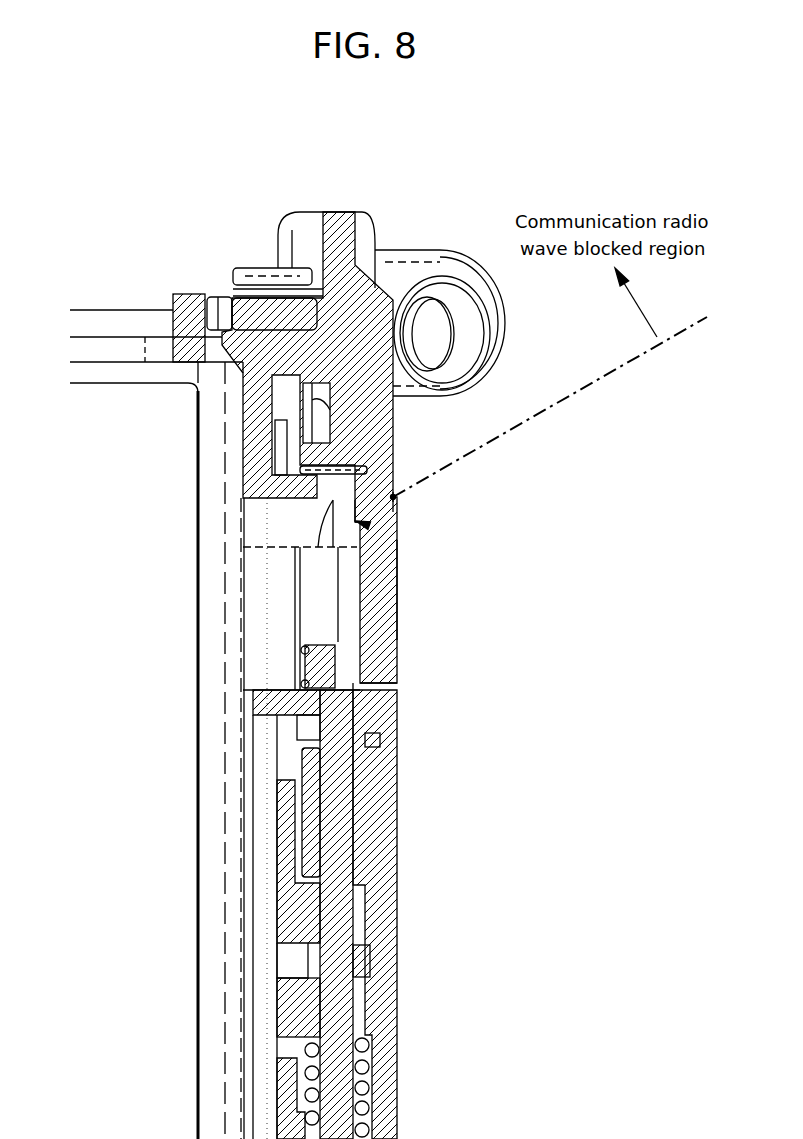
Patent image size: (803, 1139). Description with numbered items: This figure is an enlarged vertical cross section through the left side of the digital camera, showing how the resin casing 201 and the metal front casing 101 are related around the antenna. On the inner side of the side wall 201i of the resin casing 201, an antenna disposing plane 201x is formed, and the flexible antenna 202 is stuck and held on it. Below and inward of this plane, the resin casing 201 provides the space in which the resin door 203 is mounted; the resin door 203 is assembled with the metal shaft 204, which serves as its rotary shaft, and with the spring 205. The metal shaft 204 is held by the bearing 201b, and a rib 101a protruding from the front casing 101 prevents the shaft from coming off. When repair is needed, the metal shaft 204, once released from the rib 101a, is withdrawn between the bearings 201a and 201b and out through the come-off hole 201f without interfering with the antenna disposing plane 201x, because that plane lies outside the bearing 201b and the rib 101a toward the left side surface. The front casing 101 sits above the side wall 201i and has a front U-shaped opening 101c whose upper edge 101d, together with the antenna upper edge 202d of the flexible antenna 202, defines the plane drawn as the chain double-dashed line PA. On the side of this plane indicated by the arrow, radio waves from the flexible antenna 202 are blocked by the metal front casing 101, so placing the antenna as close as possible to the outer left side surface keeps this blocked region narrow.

The front casing 101 is at (367, 437).
The rib 101a is at (305, 655).
The front U-shaped opening 101c is at (393, 508).
The front-left-side-surface upper edge 101d is at (393, 497).
The resin casing 201 is at (253, 690).
The bearing 201a is at (255, 705).
The bearing 201b is at (388, 684).
The come-off hole 201f is at (337, 485).
The side wall 201i is at (397, 598).
The antenna disposing plane 201x is at (353, 575).
The flexible antenna 202 is at (353, 613).
The antenna upper edge 202d is at (358, 522).
The resin door 203 is at (385, 985).
The metal shaft 204 is at (337, 813).
The spring 205 is at (362, 1088).
The chain double-dashed line PA is at (650, 350).